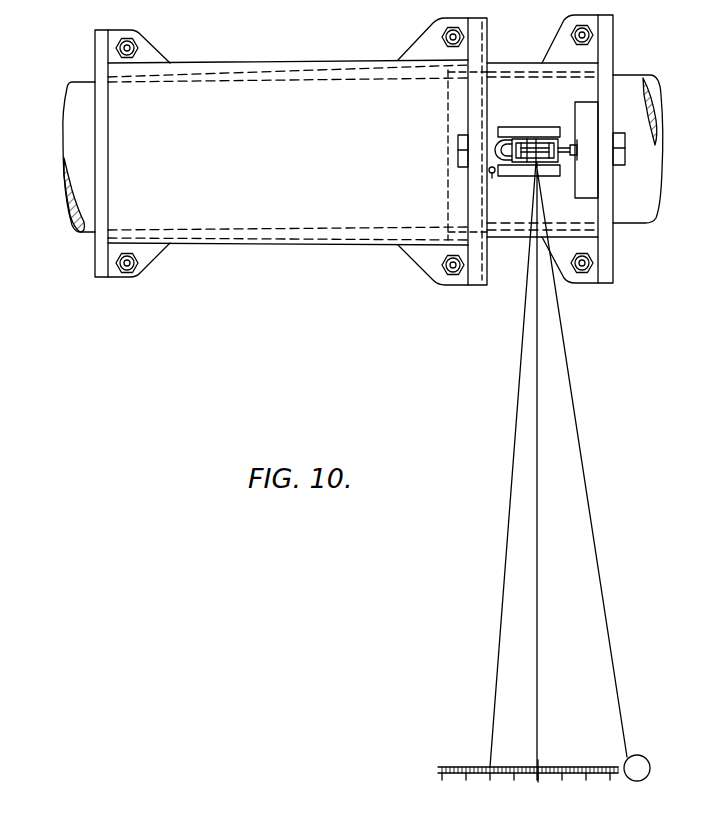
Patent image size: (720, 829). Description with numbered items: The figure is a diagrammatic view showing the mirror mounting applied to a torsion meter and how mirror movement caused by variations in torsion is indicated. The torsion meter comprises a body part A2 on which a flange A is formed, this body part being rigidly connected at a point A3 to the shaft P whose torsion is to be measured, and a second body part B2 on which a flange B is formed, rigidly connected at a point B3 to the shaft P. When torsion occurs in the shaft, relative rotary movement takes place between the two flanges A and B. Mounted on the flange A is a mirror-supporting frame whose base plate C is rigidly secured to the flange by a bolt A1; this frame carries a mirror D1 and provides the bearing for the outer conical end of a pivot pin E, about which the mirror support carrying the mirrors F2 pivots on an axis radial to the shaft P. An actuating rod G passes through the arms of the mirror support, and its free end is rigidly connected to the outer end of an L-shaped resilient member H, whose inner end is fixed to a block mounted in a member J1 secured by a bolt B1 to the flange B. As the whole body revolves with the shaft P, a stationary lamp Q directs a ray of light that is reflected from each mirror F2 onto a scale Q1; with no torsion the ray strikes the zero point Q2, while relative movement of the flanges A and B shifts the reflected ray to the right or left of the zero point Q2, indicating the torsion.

The shaft P is at (72, 134).
The connection point A3 is at (95, 242).
The body part A2 is at (283, 215).
The flange A is at (478, 193).
The bolt A1 is at (458, 146).
The second body part B2 is at (493, 78).
The connection point B3 is at (606, 66).
The flange B is at (612, 259).
The bolt B1 is at (625, 152).
The member J1 is at (585, 180).
The L-shaped resilient member H is at (567, 143).
The base plate C is at (500, 137).
The mirror F2 is at (527, 136).
The pivot pin E is at (537, 140).
The mirror D1 is at (539, 137).
The actuating rod G is at (564, 153).
The scale Q1 is at (574, 775).
The zero point Q2 is at (541, 767).
The lamp Q is at (641, 780).